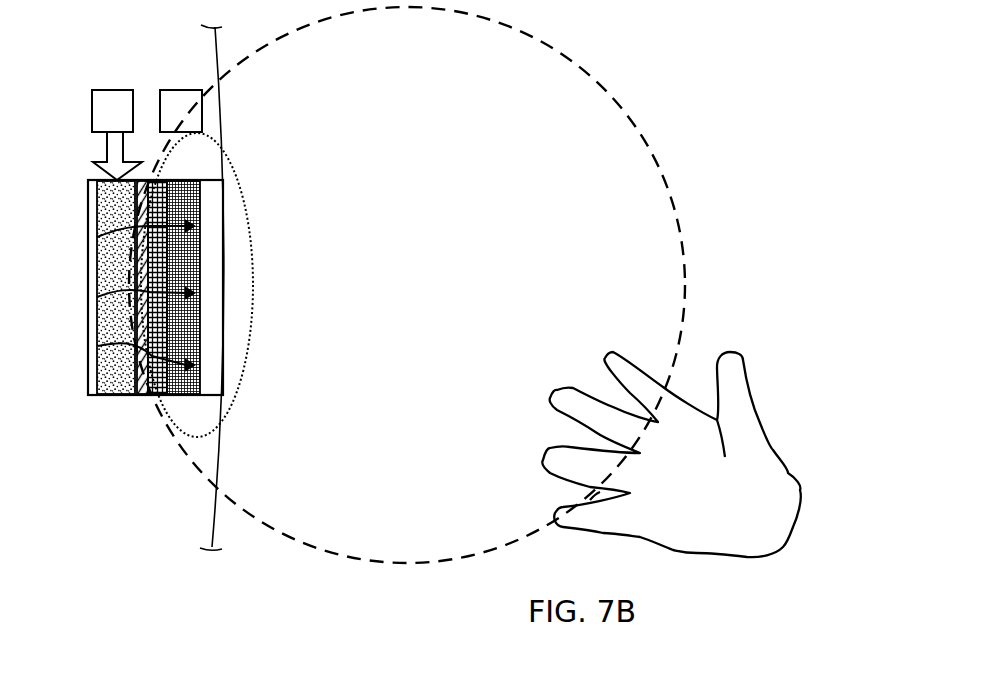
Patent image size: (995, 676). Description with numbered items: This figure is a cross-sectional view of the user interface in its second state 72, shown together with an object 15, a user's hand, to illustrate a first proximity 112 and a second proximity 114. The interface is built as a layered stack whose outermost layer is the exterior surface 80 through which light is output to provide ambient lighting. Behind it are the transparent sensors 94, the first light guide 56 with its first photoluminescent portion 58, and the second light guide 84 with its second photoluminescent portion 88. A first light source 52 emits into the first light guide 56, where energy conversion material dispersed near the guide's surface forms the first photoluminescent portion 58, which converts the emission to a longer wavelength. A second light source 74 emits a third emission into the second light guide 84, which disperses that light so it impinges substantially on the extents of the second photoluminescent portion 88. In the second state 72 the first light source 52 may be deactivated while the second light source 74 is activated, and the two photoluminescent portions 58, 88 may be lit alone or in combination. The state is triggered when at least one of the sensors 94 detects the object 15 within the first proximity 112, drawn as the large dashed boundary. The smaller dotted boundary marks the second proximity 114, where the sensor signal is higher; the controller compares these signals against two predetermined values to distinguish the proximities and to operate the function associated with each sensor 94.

The second state 72 is at (634, 53).
The first proximity 112 is at (636, 124).
The second proximity 114 is at (256, 301).
The exterior surface 80 is at (217, 195).
The second light guide 84 is at (81, 312).
The second photoluminescent portion 88 is at (110, 390).
The transparent sensors 94 is at (142, 384).
The first light guide 56 is at (142, 341).
The first photoluminescent portion 58 is at (185, 390).
The second light source 74 is at (125, 123).
The first light source 52 is at (193, 123).
The object 15 is at (763, 458).